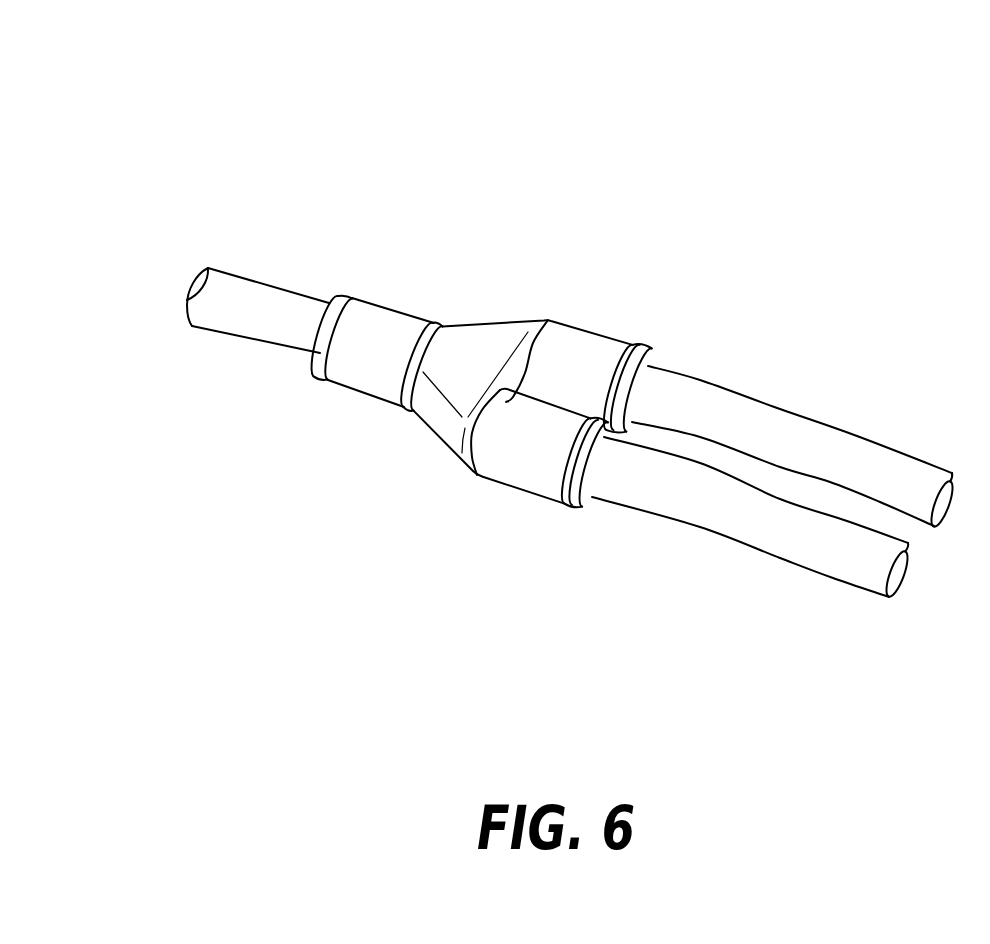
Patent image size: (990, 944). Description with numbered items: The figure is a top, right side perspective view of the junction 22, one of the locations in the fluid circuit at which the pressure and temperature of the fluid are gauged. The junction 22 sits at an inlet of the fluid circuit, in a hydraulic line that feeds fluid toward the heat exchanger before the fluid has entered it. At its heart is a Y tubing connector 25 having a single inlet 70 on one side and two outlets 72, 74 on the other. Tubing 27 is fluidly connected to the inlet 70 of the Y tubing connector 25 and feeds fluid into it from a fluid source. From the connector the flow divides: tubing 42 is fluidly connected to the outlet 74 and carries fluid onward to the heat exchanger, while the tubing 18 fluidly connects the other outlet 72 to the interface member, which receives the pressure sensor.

The junction 22 is at (606, 139).
The Y tubing connector 25 is at (497, 323).
The tubing 27 is at (245, 328).
The inlet 70 is at (325, 307).
The outlet 72 is at (648, 377).
The outlet 74 is at (589, 477).
The tubing 18 is at (767, 408).
The tubing 42 is at (697, 519).